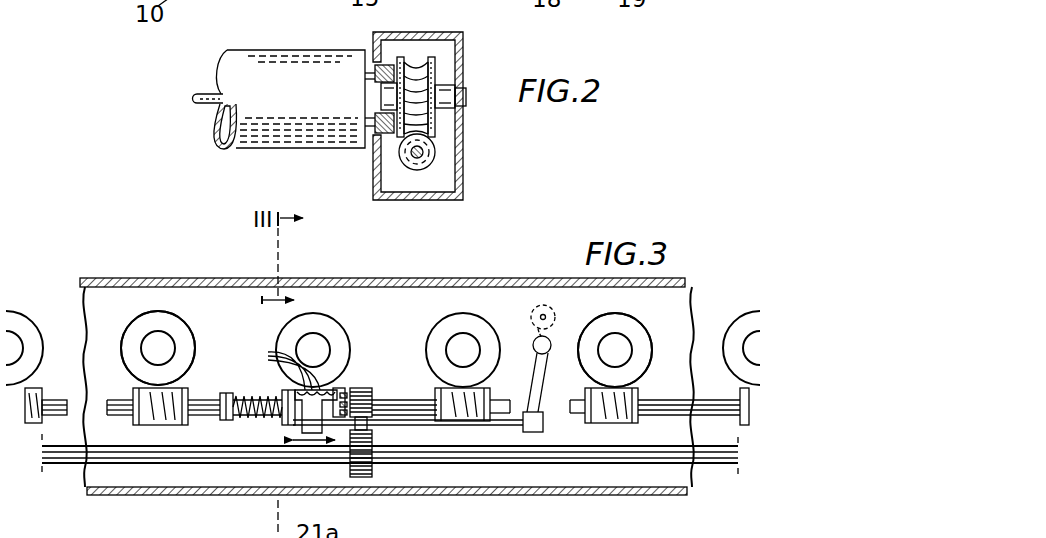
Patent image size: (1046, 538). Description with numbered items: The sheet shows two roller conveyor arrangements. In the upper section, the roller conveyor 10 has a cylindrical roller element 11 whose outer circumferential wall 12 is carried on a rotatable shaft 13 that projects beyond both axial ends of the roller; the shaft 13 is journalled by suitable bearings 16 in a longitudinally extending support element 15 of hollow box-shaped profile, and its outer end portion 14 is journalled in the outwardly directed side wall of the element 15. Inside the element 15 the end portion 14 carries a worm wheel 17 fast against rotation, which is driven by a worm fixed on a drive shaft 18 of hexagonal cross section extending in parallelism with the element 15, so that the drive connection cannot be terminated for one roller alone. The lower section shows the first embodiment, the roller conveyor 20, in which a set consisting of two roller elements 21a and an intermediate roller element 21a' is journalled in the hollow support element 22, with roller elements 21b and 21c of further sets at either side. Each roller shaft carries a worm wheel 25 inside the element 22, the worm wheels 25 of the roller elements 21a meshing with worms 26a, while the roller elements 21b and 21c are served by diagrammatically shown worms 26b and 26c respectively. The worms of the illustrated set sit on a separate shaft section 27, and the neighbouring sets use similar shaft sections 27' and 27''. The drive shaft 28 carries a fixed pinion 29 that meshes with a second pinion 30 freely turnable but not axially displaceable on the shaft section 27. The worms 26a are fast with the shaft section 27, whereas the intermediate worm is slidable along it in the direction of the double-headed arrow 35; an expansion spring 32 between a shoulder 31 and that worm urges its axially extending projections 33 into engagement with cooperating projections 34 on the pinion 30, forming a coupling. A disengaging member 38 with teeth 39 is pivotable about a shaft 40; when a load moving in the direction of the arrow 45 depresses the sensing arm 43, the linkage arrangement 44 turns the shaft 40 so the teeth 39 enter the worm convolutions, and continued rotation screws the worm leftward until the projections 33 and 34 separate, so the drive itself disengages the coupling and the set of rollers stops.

In FIG. 2, the roller conveyor 10 is at (174, 87).
In FIG. 2, the roller element 11 is at (295, 58).
In FIG. 2, the outer circumferential wall 12 is at (221, 149).
In FIG. 2, the rotatable shaft 13 is at (205, 107).
In FIG. 2, the outer end portion 14 is at (464, 101).
In FIG. 2, the support element 15 is at (463, 36).
In FIG. 2, the bearing 16 is at (374, 130).
In FIG. 2, the worm wheel 17 is at (414, 65).
In FIG. 2, the drive shaft 18 is at (419, 165).
In FIG. 3, the roller conveyor 20 is at (620, 214).
In FIG. 3, the roller element 21a is at (316, 312).
In FIG. 3, the roller element 21a' is at (317, 314).
In FIG. 3, the roller element 21b is at (35, 330).
In FIG. 3, the roller element 21c is at (624, 320).
In FIG. 3, the support element 22 is at (547, 278).
In FIG. 3, the worm wheel 25 is at (130, 337).
In FIG. 3, the worm 26a is at (157, 426).
In FIG. 3, the end bearing block 26b is at (33, 424).
In FIG. 3, the worm 26c is at (628, 424).
In FIG. 3, the shaft section 27 is at (404, 392).
In FIG. 3, the shaft section 27' is at (62, 387).
In FIG. 3, the shaft section 27'' is at (693, 392).
In FIG. 3, the drive shaft 28 is at (618, 454).
In FIG. 3, the pinion 29 is at (363, 478).
In FIG. 3, the second pinion 30 is at (350, 390).
In FIG. 3, the shoulder 31 is at (223, 393).
In FIG. 3, the expansion spring 32 is at (250, 418).
In FIG. 3, the projections 33 is at (344, 388).
In FIG. 3, the cooperating projections 34 is at (372, 420).
In FIG. 3, the double-headed arrow 35 is at (312, 448).
In FIG. 3, the disengaging member 38 is at (300, 431).
In FIG. 3, the teeth 39 is at (268, 356).
In FIG. 3, the shaft 40 is at (430, 426).
In FIG. 3, the arm 43 is at (553, 311).
In FIG. 3, the linkage arrangement 44 is at (533, 388).
In FIG. 3, the arrow 45 is at (268, 286).